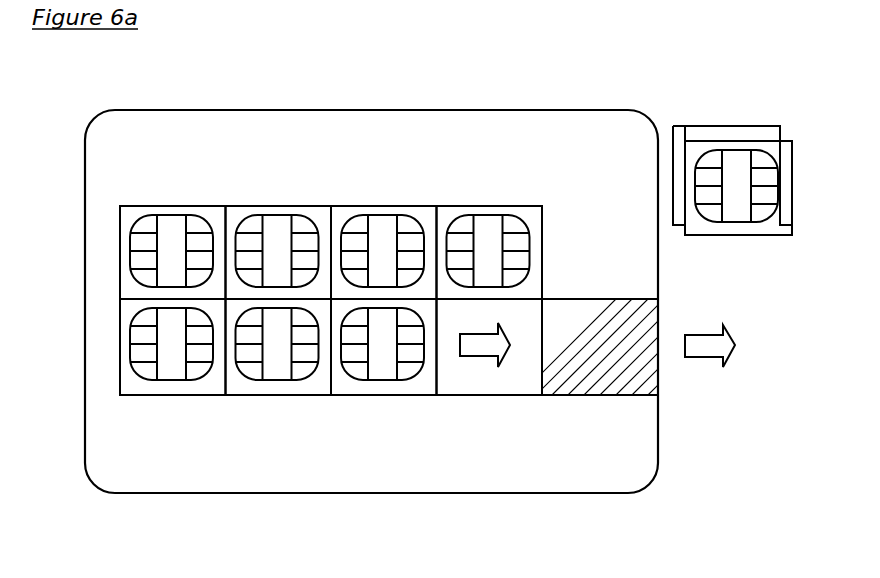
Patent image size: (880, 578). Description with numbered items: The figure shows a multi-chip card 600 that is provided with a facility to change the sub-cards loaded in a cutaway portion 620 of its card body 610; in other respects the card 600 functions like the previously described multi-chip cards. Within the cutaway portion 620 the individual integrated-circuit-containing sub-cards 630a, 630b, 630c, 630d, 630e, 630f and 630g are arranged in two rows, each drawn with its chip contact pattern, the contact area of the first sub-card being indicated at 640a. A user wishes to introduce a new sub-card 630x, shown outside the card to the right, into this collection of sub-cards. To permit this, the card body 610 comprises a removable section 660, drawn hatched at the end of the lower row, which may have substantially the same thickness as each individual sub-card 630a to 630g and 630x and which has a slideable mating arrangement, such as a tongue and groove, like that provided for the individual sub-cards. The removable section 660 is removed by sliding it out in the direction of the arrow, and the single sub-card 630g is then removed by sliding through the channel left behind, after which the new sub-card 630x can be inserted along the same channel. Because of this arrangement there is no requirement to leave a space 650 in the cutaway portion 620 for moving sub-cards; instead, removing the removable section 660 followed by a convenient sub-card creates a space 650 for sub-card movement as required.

The multi-chip card 600 is at (318, 95).
The card body 610 is at (477, 110).
The cutaway portion 620 is at (517, 395).
The sub-card 630a is at (173, 206).
The sub-card 630b is at (278, 206).
The sub-card 630c is at (383, 206).
The sub-card 630d is at (487, 206).
The sub-card 630e is at (172, 395).
The sub-card 630f is at (278, 395).
The sub-card 630g is at (383, 395).
The new sub-card 630x is at (700, 138).
The contact chip 640a is at (172, 252).
The space 650 is at (477, 373).
The removable section 660 is at (638, 372).